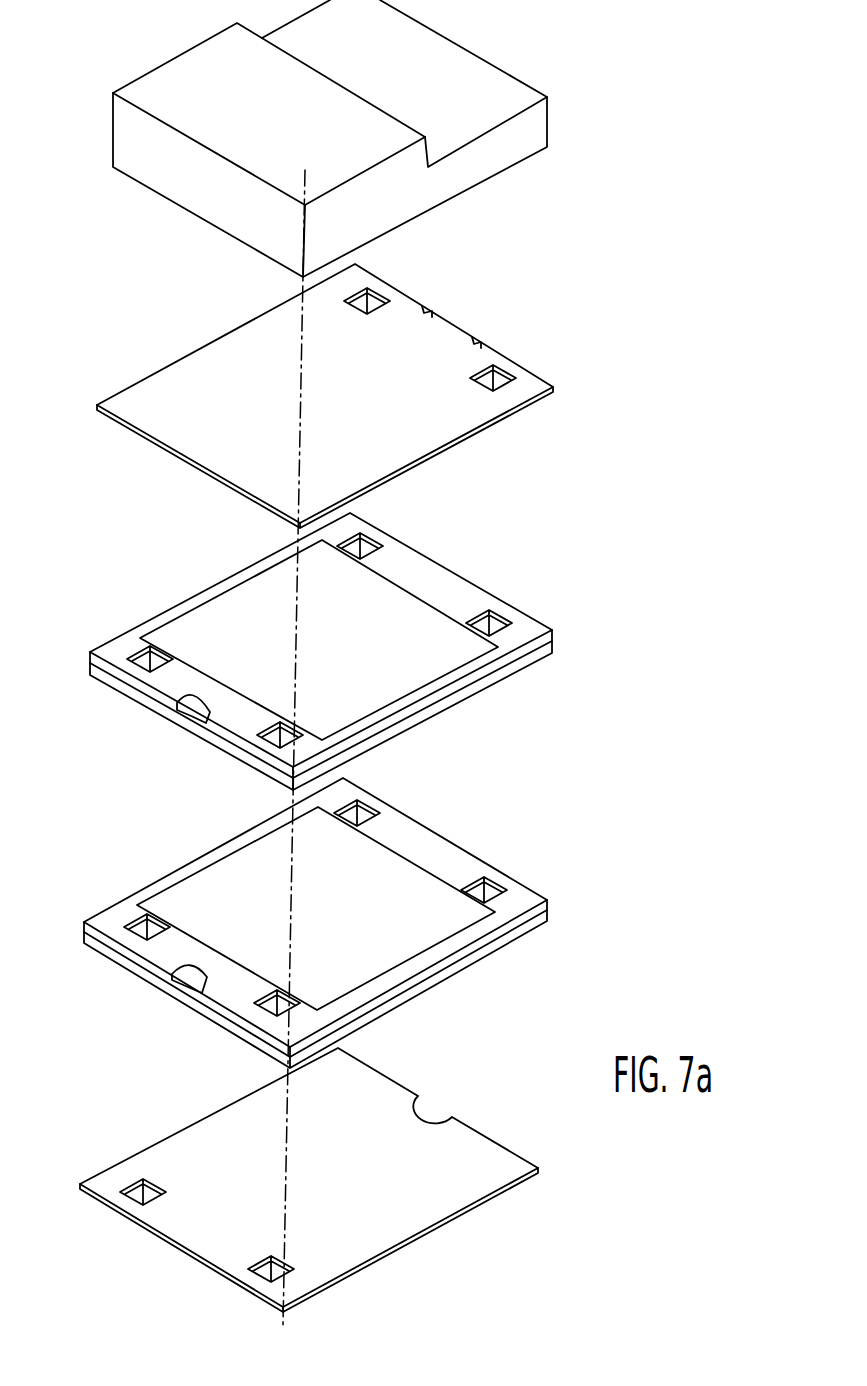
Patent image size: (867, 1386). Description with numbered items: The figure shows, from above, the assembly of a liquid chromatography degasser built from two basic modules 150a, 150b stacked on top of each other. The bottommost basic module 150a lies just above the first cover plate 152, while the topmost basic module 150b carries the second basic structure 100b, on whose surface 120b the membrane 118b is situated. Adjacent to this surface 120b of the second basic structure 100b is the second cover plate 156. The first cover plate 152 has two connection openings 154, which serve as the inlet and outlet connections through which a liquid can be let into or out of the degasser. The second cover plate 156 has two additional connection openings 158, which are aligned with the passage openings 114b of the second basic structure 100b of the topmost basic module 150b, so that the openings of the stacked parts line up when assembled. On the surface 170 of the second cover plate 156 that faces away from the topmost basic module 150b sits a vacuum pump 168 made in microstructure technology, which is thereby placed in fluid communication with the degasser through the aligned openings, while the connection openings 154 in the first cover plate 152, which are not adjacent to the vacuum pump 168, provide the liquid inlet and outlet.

The vacuum pump 168 is at (518, 145).
The surface of the second cover plate 170 is at (182, 372).
The second cover plate 156 is at (433, 446).
The additional connection openings 158 is at (365, 304).
The second basic structure 100b is at (320, 651).
The surface of the second basic structure 120b is at (440, 582).
The membrane 118b is at (228, 614).
The passage openings 114b is at (360, 552).
The topmost basic module 150b is at (522, 666).
The bottommost basic module 150a is at (483, 951).
The first cover plate 152 is at (194, 1143).
The connection openings 154 is at (148, 1189).